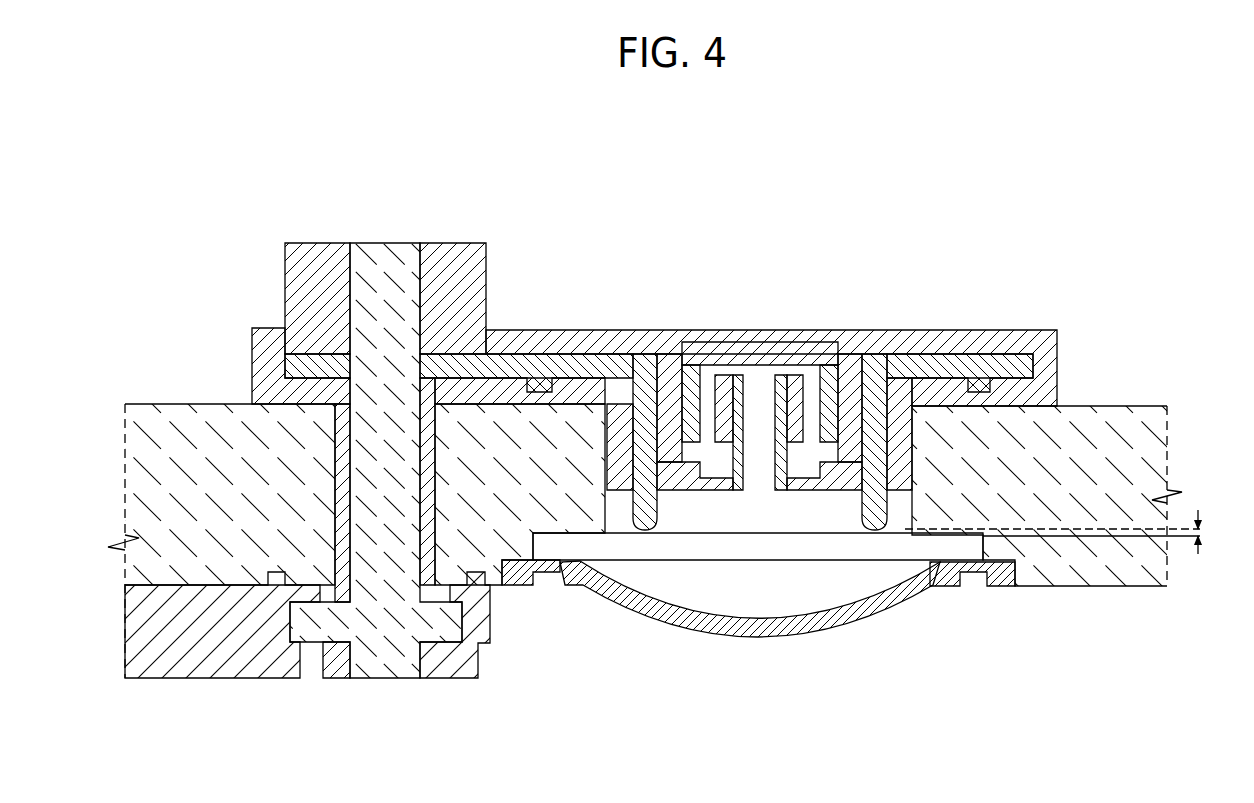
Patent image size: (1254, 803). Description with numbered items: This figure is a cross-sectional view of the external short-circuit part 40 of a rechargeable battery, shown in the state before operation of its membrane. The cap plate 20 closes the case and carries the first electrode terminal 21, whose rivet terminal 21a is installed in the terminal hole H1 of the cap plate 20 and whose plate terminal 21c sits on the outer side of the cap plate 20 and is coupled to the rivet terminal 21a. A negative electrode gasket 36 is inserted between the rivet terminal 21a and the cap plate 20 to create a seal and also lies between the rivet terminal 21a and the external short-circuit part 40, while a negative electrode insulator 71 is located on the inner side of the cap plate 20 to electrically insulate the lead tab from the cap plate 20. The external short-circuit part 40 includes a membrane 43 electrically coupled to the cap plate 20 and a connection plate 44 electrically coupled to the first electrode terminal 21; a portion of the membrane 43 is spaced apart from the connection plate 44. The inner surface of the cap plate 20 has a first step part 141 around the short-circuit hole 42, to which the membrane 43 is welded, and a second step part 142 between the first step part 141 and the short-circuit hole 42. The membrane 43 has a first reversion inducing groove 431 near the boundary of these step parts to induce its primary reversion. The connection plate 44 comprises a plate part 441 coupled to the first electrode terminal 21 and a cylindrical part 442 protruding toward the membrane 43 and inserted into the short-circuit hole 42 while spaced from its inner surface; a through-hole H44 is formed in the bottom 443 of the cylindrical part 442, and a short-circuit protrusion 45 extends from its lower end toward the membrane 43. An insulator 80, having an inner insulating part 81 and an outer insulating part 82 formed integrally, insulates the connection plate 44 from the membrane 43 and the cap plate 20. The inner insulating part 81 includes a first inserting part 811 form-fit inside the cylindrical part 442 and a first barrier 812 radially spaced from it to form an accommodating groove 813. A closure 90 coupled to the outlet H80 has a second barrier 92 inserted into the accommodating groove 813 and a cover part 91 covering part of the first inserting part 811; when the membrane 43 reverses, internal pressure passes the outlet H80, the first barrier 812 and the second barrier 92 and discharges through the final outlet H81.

The cap plate 20 is at (1098, 552).
The first electrode terminal 21 is at (396, 411).
The rivet terminal 21a is at (387, 258).
The plate terminal 21c is at (452, 260).
The negative electrode gasket 36 is at (335, 473).
The terminal hole H1 is at (335, 502).
The negative electrode insulator 71 is at (187, 678).
The external short-circuit part 40 is at (627, 453).
The connection plate 44 is at (627, 350).
The plate part 441 is at (907, 365).
The cylindrical part 442 is at (875, 420).
The short-circuit hole 42 is at (905, 536).
The membrane 43 is at (638, 612).
The first reversion inducing groove 431 is at (553, 587).
The short-circuit protrusion 45 is at (880, 488).
The bottom 443 is at (835, 478).
The through-hole H44 is at (778, 470).
The outlet H80 is at (757, 478).
The first step part 141 is at (1000, 587).
The second step part 142 is at (973, 573).
The insulator 80 is at (843, 349).
The inner insulating part 81 is at (715, 349).
The first inserting part 811 is at (660, 430).
The first barrier 812 is at (725, 392).
The accommodating groove 813 is at (633, 425).
The outer insulating part 82 is at (1048, 363).
The closure 90 is at (801, 282).
The cover part 91 is at (777, 346).
The second barrier 92 is at (835, 346).
The final outlet H81 is at (853, 346).